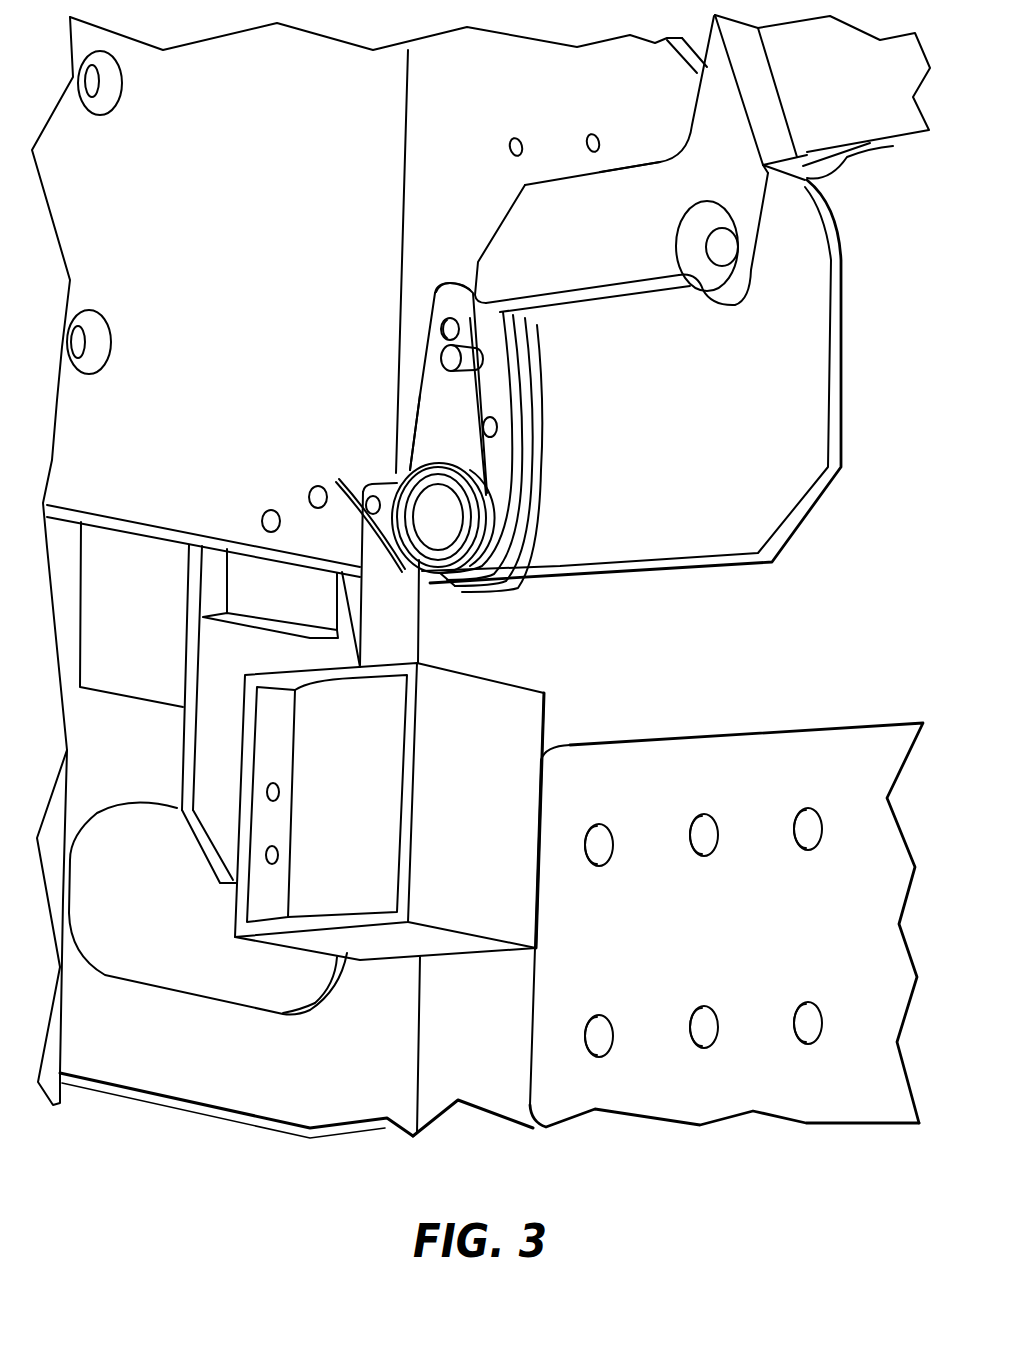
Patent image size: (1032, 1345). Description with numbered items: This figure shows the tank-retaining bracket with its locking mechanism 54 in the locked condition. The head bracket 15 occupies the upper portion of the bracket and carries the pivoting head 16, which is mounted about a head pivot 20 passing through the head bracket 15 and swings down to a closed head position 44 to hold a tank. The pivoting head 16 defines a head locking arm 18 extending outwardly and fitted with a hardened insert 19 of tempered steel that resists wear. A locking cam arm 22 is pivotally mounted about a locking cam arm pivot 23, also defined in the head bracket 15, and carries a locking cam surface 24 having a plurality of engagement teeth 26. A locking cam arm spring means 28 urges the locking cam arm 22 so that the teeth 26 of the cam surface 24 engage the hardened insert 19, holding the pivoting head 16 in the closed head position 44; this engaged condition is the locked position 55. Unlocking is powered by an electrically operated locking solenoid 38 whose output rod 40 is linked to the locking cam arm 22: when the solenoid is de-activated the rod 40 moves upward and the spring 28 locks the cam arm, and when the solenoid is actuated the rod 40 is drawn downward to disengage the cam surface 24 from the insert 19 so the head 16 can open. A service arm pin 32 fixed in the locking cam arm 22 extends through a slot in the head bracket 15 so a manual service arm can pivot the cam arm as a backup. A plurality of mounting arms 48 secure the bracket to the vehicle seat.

The head bracket 15 is at (752, 453).
The pivoting head 16 is at (859, 144).
The head locking arm 18 is at (630, 175).
The hardened insert 19 is at (584, 290).
The head pivot 20 is at (719, 262).
The locking cam arm 22 is at (458, 425).
The locking cam arm pivot 23 is at (453, 521).
The locking cam surface 24 is at (450, 283).
The engagement teeth 26 is at (438, 312).
The locking cam arm spring means 28 is at (469, 549).
The service arm pin 32 is at (443, 358).
The locking solenoid 38 is at (372, 794).
The output rod 40 is at (405, 628).
The closed head position 44 is at (713, 58).
The mounting arms 48 is at (734, 933).
The locking mechanism 54 is at (540, 430).
The locked position 55 is at (427, 446).